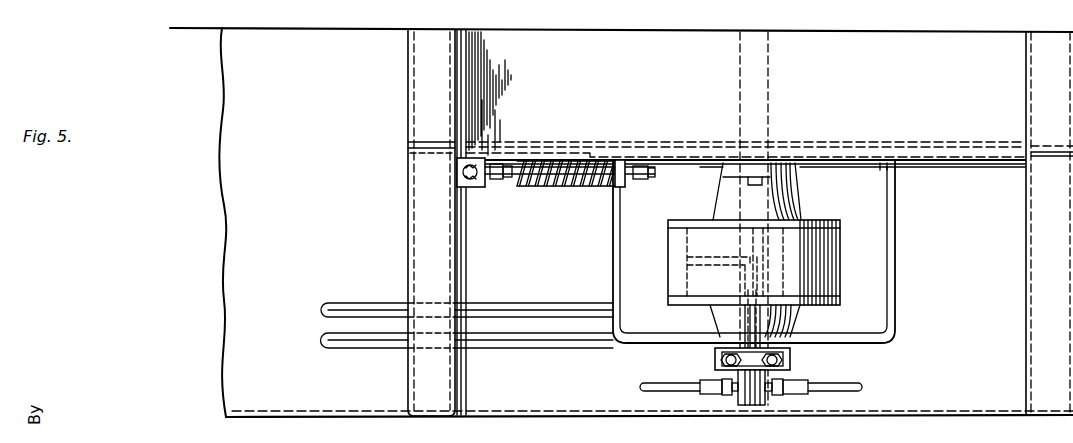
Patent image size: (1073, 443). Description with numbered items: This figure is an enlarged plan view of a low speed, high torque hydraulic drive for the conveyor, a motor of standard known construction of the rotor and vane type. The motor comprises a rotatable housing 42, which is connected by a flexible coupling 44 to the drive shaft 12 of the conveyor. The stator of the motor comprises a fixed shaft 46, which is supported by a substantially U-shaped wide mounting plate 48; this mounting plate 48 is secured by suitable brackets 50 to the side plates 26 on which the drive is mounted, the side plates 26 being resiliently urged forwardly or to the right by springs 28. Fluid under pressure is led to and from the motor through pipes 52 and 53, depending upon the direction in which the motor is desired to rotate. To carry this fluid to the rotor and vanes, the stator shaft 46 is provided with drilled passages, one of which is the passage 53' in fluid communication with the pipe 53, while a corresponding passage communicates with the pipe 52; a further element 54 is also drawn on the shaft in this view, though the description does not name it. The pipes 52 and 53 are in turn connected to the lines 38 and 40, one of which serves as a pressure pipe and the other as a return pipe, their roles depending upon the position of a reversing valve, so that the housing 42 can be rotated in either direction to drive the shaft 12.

The drive shaft 12 is at (762, 73).
The side plates 26 is at (678, 160).
The springs 28 is at (573, 183).
The line 38 is at (530, 297).
The line 40 is at (535, 348).
The rotatable housing 42 is at (830, 278).
The flexible coupling 44 is at (756, 179).
The fixed shaft 46 is at (751, 396).
The U-shaped mounting plate 48 is at (913, 247).
The brackets 50 is at (884, 186).
The pipe 52 is at (641, 386).
The pipe 53 is at (817, 379).
The drilled passage 53' is at (775, 322).
The shaft 54 is at (740, 327).